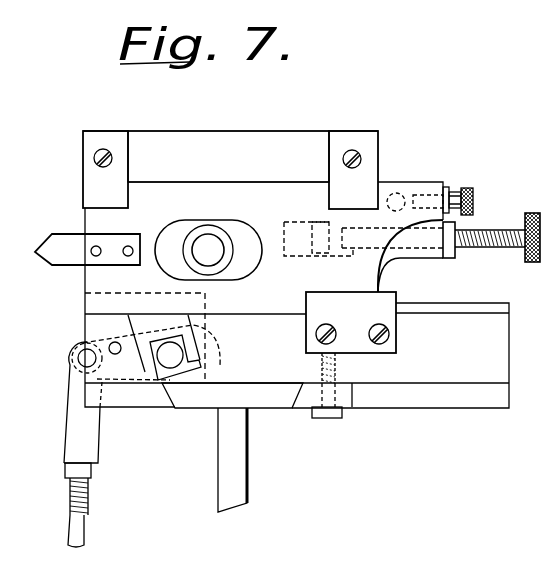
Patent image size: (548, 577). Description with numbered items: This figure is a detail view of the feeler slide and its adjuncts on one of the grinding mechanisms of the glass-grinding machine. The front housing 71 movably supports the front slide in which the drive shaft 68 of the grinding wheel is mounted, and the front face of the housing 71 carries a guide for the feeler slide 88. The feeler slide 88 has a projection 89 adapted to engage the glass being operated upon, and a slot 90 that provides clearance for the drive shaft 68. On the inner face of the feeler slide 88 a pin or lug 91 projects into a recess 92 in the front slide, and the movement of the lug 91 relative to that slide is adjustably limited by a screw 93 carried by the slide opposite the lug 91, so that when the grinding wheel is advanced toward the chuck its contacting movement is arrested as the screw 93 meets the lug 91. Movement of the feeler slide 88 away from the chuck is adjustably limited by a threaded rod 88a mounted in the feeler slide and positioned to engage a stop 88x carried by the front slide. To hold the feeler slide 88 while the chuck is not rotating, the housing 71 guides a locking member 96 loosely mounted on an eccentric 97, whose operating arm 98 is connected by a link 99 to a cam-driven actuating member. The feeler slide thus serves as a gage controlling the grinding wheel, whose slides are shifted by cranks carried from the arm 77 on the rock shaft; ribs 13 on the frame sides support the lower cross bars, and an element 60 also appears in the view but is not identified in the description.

The housing 71 is at (203, 130).
The drive shaft 68 is at (202, 235).
The recess 92 is at (283, 228).
The pin or lug 91 is at (314, 229).
The feeler slide 88 is at (361, 257).
The stop 88x is at (397, 193).
The threaded rod 88a is at (452, 190).
The screw 93 is at (496, 229).
The projection 89 is at (63, 262).
The slot 90 is at (245, 280).
The bracket 60 is at (420, 259).
The locking member 96 is at (160, 340).
The eccentric 97 is at (176, 350).
The operating arm 98 is at (74, 358).
The link 99 is at (66, 452).
The ribs 13 is at (273, 398).
The arm 77 is at (232, 488).